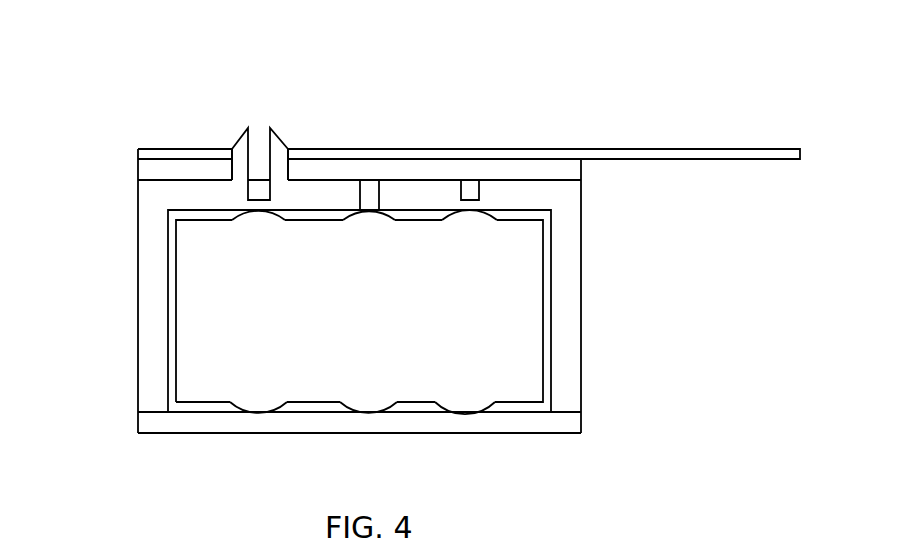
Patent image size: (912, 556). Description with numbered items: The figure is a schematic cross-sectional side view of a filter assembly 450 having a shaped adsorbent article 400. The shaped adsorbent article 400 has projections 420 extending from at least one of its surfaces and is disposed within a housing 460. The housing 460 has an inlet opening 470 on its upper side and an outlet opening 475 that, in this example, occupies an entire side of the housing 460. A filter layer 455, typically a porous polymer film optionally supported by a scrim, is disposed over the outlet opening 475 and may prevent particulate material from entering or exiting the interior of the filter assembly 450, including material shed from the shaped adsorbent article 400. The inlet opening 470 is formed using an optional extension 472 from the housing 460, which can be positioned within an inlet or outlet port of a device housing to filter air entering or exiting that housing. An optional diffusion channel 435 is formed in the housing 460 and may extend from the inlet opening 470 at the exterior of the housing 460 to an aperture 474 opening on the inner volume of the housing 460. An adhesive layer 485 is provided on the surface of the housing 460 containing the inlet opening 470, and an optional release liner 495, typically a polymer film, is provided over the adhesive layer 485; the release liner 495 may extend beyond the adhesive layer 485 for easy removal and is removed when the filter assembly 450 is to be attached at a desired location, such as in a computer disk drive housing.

The shaped adsorbent article 400 is at (175, 265).
The projections 420 is at (487, 413).
The diffusion channel 435 is at (473, 178).
The filter assembly 450 is at (555, 119).
The filter layer 455 is at (581, 423).
The housing 460 is at (581, 278).
The inlet opening 470 is at (260, 126).
The extension 472 is at (276, 129).
The aperture 474 is at (370, 196).
The outlet opening 475 is at (211, 437).
The adhesive layer 485 is at (582, 167).
The release liner 495 is at (800, 155).